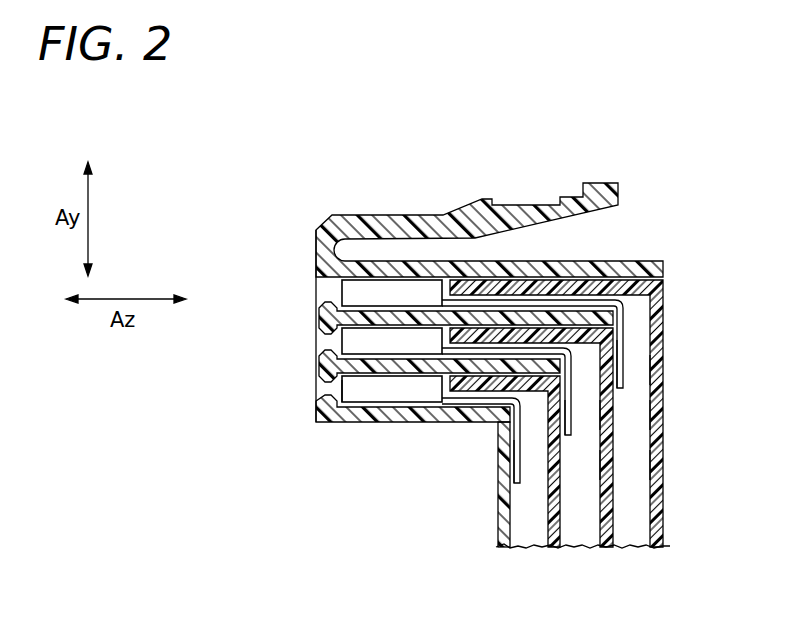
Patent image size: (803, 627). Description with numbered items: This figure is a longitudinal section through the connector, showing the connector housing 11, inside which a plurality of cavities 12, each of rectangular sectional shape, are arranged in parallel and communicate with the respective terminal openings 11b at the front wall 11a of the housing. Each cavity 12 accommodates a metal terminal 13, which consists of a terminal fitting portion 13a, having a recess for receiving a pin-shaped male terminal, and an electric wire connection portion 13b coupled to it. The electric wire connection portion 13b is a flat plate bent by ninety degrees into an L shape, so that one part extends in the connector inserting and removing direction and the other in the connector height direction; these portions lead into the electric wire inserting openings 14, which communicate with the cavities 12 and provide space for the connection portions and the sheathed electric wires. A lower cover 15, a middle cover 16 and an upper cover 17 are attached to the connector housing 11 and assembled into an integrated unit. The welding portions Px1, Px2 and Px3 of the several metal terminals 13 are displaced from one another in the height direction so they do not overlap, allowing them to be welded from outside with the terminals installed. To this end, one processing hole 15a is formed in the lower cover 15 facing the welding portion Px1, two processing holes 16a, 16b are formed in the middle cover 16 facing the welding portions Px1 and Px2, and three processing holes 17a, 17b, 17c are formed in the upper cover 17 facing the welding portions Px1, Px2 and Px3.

The connector housing 11 is at (427, 224).
The front wall of housing 11a is at (316, 237).
The terminal opening 11b is at (316, 293).
The cavity 12 is at (362, 380).
The metal terminal 13 is at (415, 293).
The terminal fitting portion 13a is at (357, 397).
The electric wire connection portion 13b is at (513, 437).
The electric wire inserting opening 14 is at (632, 518).
The lower cover 15 is at (557, 550).
The processing hole 15a is at (500, 513).
The middle cover 16 is at (607, 550).
The processing hole 16a is at (610, 465).
The processing hole 16b is at (605, 415).
The upper cover 17 is at (657, 550).
The processing hole 17a is at (657, 465).
The processing hole 17b is at (657, 413).
The processing hole 17c is at (657, 368).
The welding portion Px1 is at (517, 465).
The welding portion Px2 is at (568, 418).
The welding portion Px3 is at (622, 362).